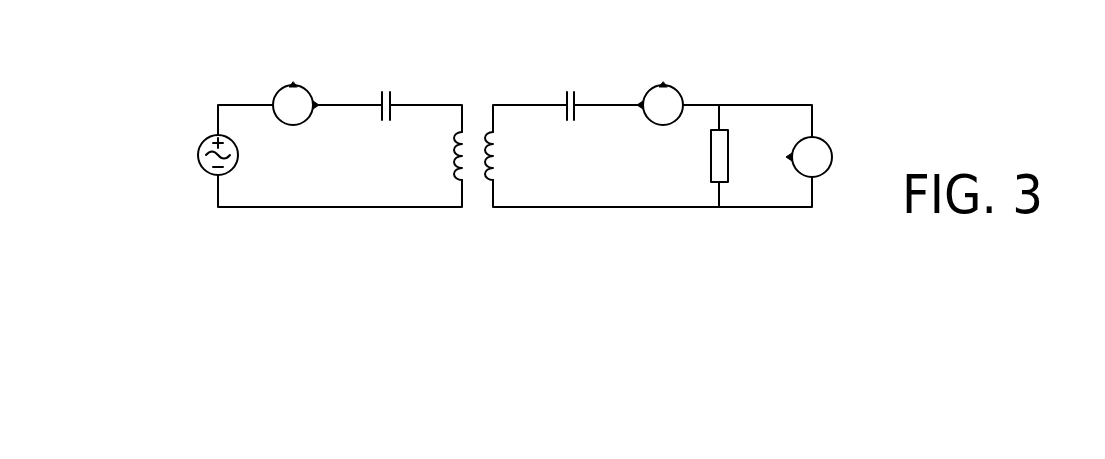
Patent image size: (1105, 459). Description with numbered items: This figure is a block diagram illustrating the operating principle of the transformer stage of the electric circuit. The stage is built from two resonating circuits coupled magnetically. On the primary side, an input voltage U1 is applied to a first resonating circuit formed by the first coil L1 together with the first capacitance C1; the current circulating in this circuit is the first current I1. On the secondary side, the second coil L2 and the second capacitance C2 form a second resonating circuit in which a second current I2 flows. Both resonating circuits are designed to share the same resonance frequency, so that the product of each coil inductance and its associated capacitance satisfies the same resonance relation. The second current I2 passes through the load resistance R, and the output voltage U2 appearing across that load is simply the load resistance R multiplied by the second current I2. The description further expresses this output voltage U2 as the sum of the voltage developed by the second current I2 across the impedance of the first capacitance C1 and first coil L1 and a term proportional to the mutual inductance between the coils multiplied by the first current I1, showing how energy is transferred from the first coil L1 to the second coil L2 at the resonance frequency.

The input voltage U1 is at (200, 155).
The first current I1 is at (296, 117).
The first capacitance C1 is at (386, 118).
The first coil L1 is at (442, 156).
The second coil L2 is at (506, 156).
The second capacitance C2 is at (571, 119).
The second current I2 is at (660, 117).
The load resistance R is at (731, 156).
The output voltage U2 is at (827, 157).